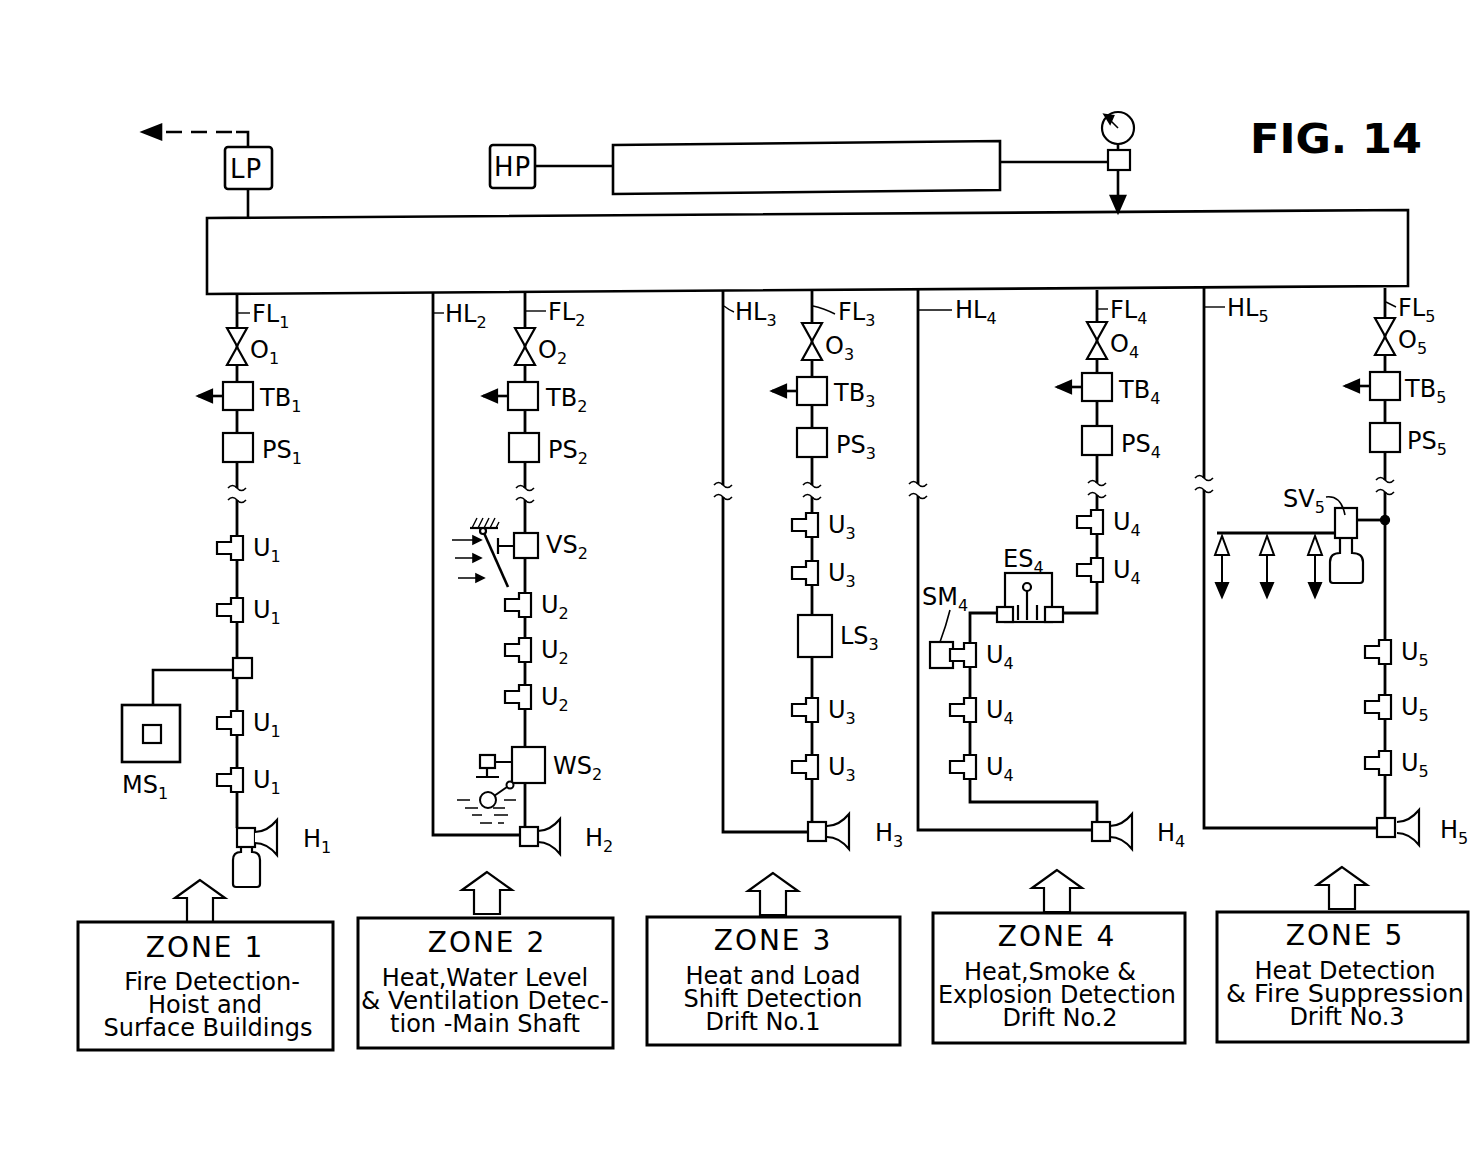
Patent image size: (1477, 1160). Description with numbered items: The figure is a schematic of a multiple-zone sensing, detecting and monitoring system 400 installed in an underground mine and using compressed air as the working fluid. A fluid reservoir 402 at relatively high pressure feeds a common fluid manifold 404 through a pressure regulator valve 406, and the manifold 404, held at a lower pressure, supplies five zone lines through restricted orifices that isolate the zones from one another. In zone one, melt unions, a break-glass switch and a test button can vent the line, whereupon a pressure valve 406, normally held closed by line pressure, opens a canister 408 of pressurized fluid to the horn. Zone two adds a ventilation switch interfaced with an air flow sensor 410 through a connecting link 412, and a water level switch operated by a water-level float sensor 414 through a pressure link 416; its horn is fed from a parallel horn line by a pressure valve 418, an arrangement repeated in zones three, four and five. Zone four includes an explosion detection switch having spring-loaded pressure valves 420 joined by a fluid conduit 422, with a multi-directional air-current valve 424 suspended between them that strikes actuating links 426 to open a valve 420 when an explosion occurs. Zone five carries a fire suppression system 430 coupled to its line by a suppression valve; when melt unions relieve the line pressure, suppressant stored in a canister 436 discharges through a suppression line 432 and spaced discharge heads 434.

The multiple-zone sensing, detecting and monitoring system 400 is at (807, 213).
The fluid reservoir 402 is at (813, 143).
The common fluid manifold 404 is at (1265, 210).
The pressure valve 406 is at (1130, 161).
The canister 408 is at (250, 873).
The air flow sensor 410 is at (507, 585).
The connecting link 412 is at (506, 542).
The water-level float sensor 414 is at (491, 792).
The pressure link 416 is at (484, 755).
The pressure valve 418 is at (527, 845).
The spring-loaded pressure valves 420 is at (1063, 622).
The fluid conduit 422 is at (1005, 583).
The multi-directional air-current valve 424 is at (1003, 603).
The actuating links 426 is at (1037, 622).
The fire suppression system 430 is at (1275, 542).
The suppression line 432 is at (1283, 532).
The discharge heads 434 is at (1228, 568).
The canister 436 is at (1340, 583).